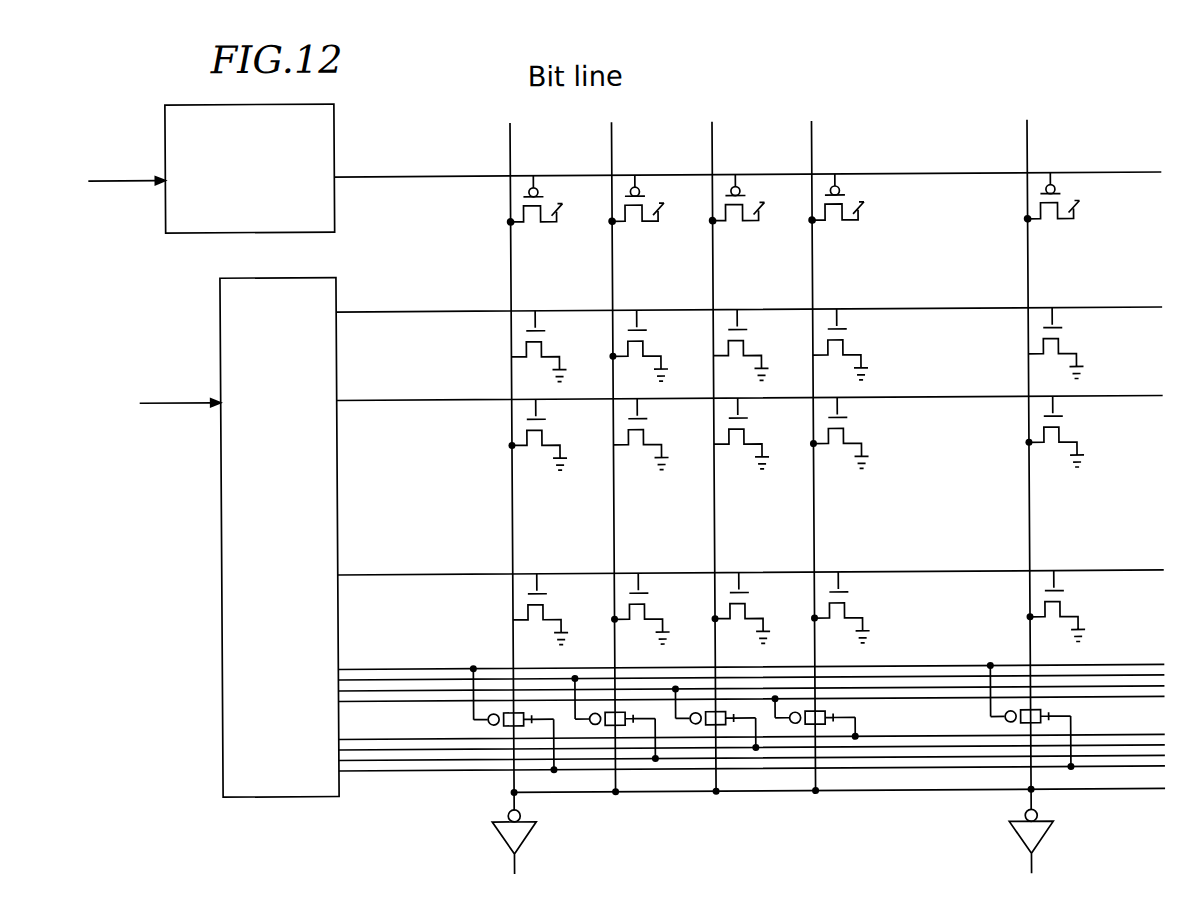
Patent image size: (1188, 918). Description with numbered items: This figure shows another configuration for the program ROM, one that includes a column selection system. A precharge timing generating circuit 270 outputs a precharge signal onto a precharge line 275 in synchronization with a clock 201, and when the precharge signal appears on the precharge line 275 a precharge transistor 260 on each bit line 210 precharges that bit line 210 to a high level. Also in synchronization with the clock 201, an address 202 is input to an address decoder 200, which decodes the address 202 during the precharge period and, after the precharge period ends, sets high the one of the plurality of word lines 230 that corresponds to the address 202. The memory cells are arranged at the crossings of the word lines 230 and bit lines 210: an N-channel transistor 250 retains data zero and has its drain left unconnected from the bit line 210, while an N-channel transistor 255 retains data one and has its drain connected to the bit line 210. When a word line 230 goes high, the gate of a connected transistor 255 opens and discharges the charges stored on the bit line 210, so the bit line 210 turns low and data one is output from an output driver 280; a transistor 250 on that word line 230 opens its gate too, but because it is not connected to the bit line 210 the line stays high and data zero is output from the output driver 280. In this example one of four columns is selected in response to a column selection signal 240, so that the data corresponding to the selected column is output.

The address decoder 200 is at (221, 768).
The clock 201 is at (92, 173).
The address 202 is at (148, 421).
The bit line 210 is at (790, 449).
The word line 230 is at (352, 312).
The column selection signal 240 is at (383, 655).
The N-channel transistor 250 is at (773, 476).
The N-channel transistor 255 is at (773, 476).
The precharge transistor 260 is at (816, 229).
The precharge timing generating circuit 270 is at (193, 230).
The precharge line 275 is at (345, 176).
The output driver 280 is at (540, 843).